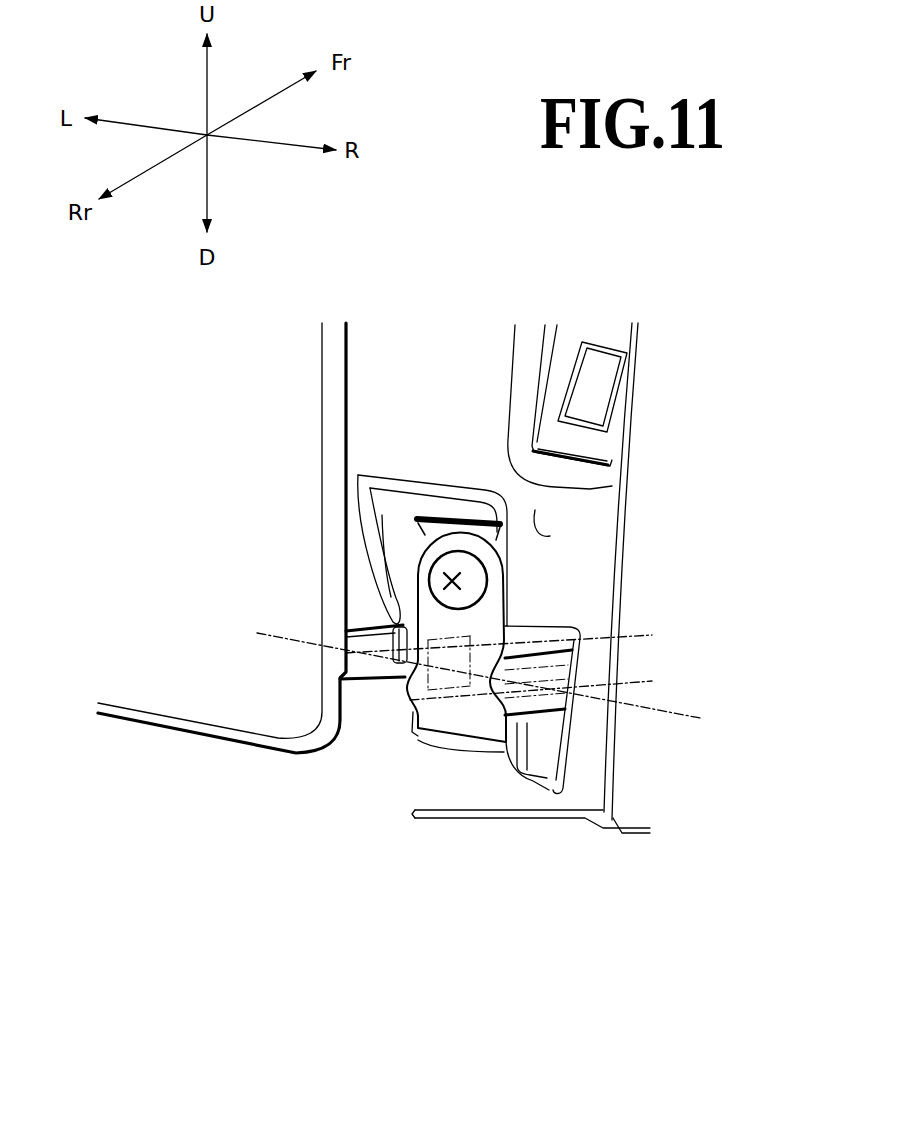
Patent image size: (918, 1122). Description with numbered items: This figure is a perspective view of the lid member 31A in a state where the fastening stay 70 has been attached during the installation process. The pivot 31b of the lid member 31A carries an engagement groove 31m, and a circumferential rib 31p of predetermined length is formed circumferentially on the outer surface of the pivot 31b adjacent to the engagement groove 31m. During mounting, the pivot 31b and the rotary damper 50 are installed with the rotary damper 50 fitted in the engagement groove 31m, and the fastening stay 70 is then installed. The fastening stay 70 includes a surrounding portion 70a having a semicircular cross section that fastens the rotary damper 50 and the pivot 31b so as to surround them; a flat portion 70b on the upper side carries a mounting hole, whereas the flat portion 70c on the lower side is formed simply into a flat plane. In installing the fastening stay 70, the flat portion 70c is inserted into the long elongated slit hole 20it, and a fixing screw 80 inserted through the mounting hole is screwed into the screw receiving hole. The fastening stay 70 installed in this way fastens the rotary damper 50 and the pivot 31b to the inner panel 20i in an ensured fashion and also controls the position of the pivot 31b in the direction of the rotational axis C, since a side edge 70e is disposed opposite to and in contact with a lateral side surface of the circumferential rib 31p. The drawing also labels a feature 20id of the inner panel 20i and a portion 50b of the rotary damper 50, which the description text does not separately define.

The inner panel 20i is at (550, 536).
The hook portion of inner panel 20id is at (408, 540).
The long elongated slit hole 20it is at (470, 814).
The lid member 31A is at (266, 673).
The pivot 31b is at (364, 631).
The circumferential rib 31p is at (385, 668).
The engagement groove 31m is at (652, 635).
The rotary damper 50 is at (545, 734).
The center line of bracket 50b is at (652, 681).
The fastening stay 70 is at (456, 697).
The surrounding portion 70a is at (573, 710).
The flat portion 70b is at (485, 612).
The flat portion 70c is at (428, 738).
The side edge 70e is at (392, 735).
The fixing screw 80 is at (430, 573).
The rotational axis C is at (688, 712).